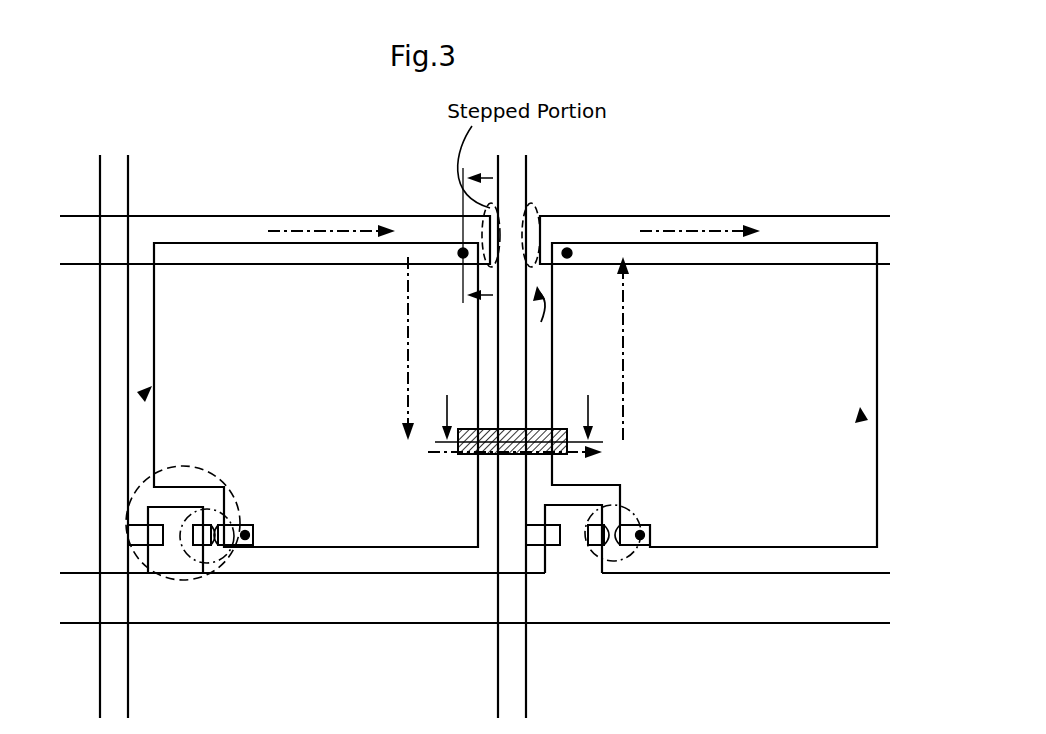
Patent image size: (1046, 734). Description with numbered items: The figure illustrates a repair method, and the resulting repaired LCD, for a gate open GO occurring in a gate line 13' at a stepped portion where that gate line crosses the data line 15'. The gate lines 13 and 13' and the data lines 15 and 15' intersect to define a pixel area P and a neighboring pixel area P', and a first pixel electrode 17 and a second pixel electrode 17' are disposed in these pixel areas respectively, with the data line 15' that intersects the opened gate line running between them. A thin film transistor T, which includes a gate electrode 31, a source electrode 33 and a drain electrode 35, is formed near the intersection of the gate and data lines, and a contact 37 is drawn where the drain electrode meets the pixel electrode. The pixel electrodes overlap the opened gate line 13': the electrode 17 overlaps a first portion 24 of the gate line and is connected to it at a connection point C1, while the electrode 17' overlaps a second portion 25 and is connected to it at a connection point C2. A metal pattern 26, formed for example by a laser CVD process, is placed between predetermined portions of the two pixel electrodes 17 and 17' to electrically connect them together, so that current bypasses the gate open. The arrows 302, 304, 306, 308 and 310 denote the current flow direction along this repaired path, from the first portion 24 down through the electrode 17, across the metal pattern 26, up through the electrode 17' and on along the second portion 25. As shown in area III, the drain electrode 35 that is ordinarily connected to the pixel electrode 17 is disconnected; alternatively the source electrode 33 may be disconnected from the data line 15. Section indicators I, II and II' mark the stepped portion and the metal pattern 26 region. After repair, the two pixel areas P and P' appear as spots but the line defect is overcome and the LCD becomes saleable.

The gate line 13' is at (465, 207).
The gate line 13 is at (467, 564).
The data line 15 is at (155, 436).
The data line 15' is at (567, 436).
The pixel electrode 17 is at (262, 395).
The pixel electrode 17' is at (714, 468).
The first portion 24 is at (323, 222).
The second portion 25 is at (690, 222).
The metal pattern 26 is at (464, 456).
The gate electrode 31 is at (182, 549).
The source electrode 33 is at (160, 533).
The drain electrode 35 is at (245, 549).
The contact hole 37 is at (247, 535).
The arrow 302 is at (351, 232).
The arrow 304 is at (410, 352).
The arrow 306 is at (440, 452).
The arrow 308 is at (626, 372).
The arrow 310 is at (704, 231).
The connection point C1 is at (463, 256).
The connection point C2 is at (567, 256).
The gate open GO is at (541, 322).
The pixel area P is at (100, 408).
The pixel area P' is at (899, 435).
The thin film transistor T is at (238, 492).
The section line I- I is at (478, 226).
The section line II is at (519, 405).
The section line II' is at (586, 404).
The area III is at (210, 563).